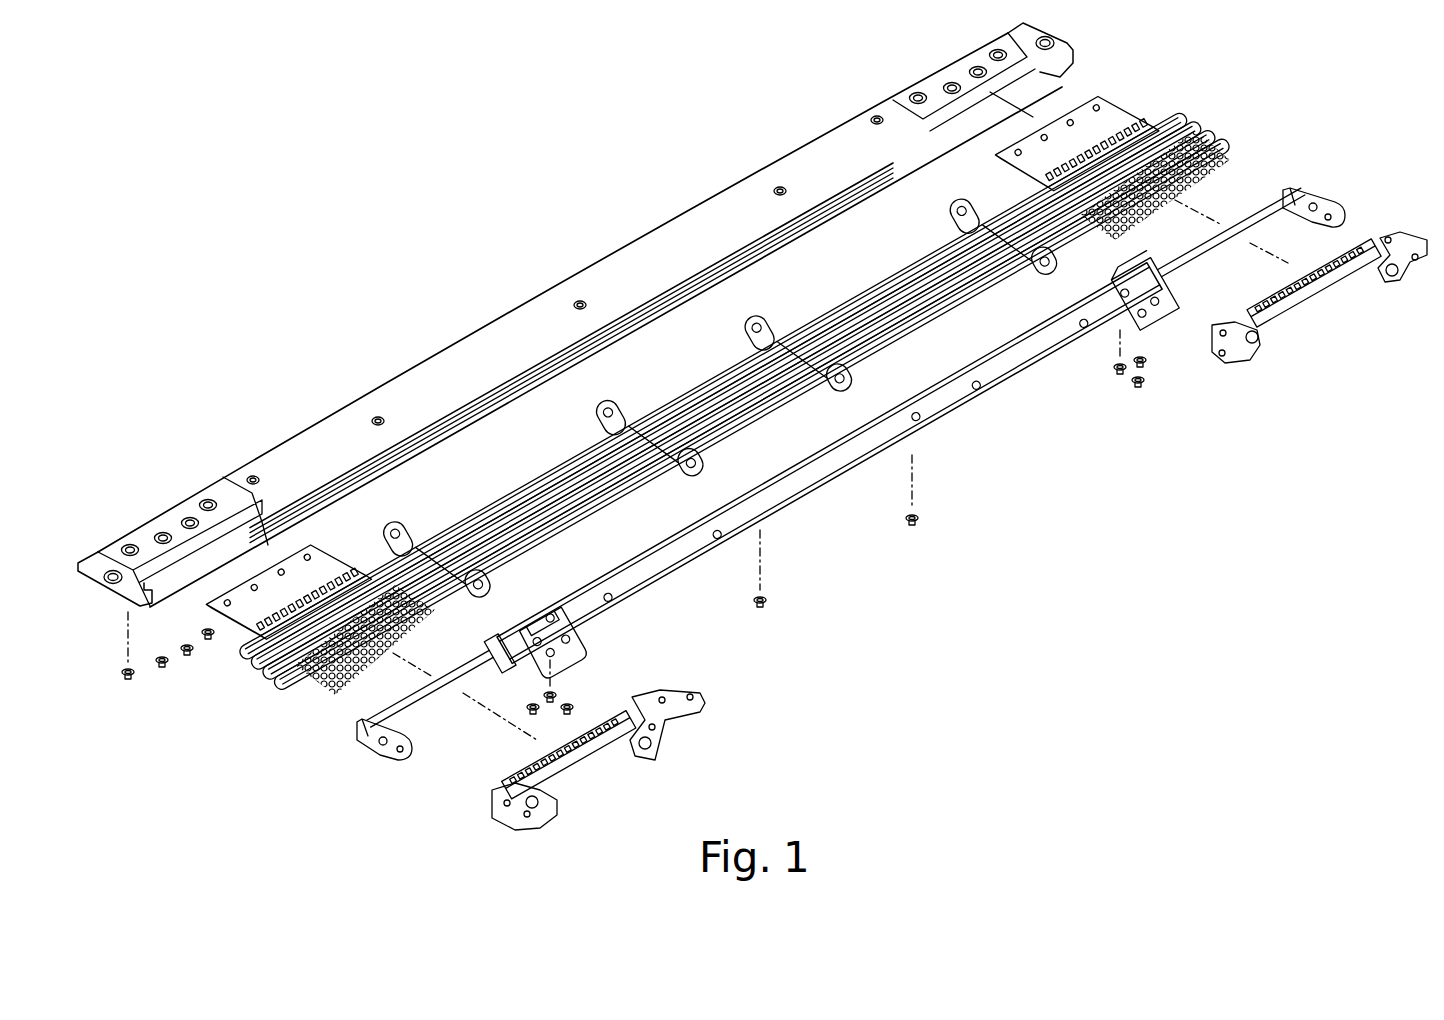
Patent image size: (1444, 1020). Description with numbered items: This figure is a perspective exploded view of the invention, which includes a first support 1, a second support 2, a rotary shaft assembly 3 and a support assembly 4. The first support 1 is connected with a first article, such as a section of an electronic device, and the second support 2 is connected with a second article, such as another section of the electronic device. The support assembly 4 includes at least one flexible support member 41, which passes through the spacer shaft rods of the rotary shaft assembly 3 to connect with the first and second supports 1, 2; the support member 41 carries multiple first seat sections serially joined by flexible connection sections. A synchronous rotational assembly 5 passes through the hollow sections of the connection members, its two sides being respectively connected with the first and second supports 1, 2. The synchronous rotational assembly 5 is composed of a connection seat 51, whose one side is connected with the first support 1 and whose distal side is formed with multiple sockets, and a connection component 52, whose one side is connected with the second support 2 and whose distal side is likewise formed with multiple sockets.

The first support 1 is at (450, 372).
The second support 2 is at (813, 463).
The rotary shaft assembly 3 is at (504, 488).
The support assembly 4 is at (720, 398).
The flexible support member 41 is at (618, 414).
The synchronous rotational assembly 5 is at (315, 708).
The connection seat 51 is at (330, 556).
The connection component 52 is at (628, 712).